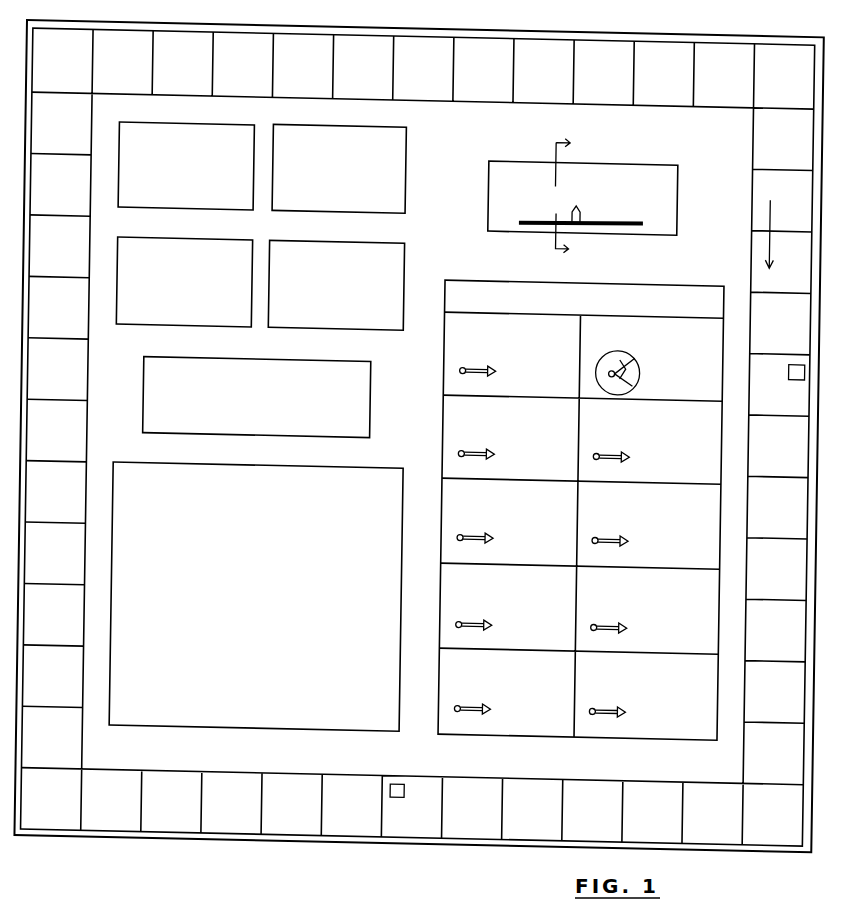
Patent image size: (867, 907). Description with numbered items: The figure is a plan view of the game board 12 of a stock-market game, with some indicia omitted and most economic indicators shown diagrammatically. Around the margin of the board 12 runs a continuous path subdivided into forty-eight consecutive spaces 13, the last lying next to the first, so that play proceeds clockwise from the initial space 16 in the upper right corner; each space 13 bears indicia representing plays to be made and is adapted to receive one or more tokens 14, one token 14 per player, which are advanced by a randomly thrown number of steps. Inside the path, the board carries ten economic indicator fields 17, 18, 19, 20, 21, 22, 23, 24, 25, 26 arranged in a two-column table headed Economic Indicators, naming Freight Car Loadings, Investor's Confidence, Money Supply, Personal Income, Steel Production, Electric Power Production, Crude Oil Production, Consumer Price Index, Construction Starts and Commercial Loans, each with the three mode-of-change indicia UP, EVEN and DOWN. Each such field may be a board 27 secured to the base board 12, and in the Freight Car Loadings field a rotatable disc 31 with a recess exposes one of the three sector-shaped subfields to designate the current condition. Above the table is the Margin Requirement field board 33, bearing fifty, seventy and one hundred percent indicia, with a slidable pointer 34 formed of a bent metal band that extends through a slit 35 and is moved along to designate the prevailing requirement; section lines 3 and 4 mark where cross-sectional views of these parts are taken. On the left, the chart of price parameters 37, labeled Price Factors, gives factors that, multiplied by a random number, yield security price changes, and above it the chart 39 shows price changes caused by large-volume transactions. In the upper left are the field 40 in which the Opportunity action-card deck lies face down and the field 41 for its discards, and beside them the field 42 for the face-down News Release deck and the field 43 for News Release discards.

The game board 12 is at (663, 2).
The initial space 16 is at (779, 45).
The spaces 13 is at (782, 124).
The token 14 is at (385, 757).
The section line 3- 3 is at (776, 231).
The section line 4- 4 is at (672, 206).
The field for action cards 40 is at (131, 186).
The field for discarded action cards 41 is at (131, 303).
The field for News Release cards 42 is at (291, 186).
The field for News Release discards 43 is at (290, 303).
The chart 39 is at (194, 381).
The chart of price parameters 37 is at (186, 559).
The field board 33 is at (593, 211).
The slidable pointer 34 is at (559, 193).
The slit 35 is at (580, 240).
The board 27 is at (683, 291).
The economic indicator field 26 is at (422, 331).
The economic indicator field 25 is at (422, 428).
The economic indicator field 24 is at (422, 513).
The economic indicator field 23 is at (422, 608).
The economic indicator field 22 is at (422, 692).
The economic indicator field 17 is at (664, 358).
The economic indicator field 18 is at (700, 446).
The economic indicator field 19 is at (700, 518).
The economic indicator field 20 is at (700, 613).
The economic indicator field 21 is at (700, 695).
The disc 31 is at (590, 330).